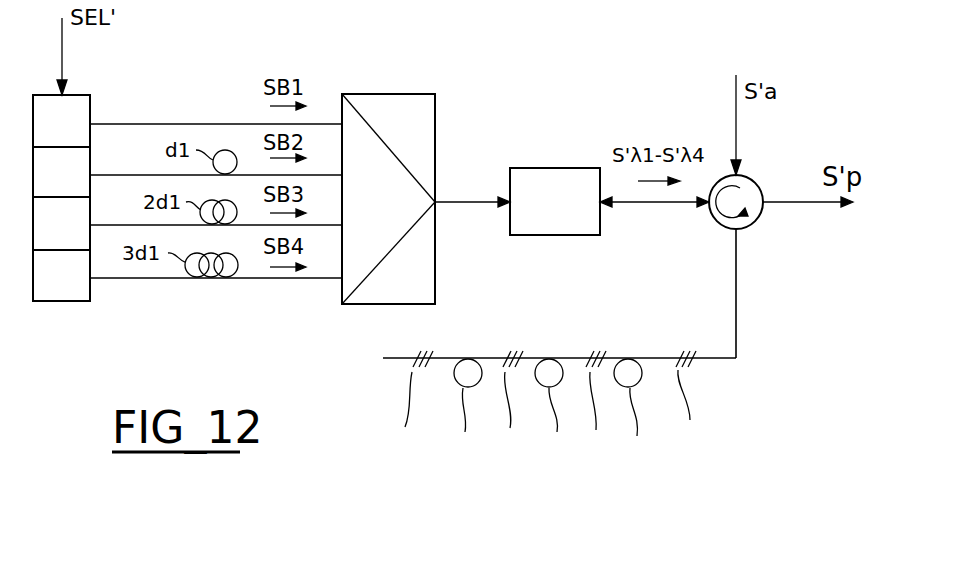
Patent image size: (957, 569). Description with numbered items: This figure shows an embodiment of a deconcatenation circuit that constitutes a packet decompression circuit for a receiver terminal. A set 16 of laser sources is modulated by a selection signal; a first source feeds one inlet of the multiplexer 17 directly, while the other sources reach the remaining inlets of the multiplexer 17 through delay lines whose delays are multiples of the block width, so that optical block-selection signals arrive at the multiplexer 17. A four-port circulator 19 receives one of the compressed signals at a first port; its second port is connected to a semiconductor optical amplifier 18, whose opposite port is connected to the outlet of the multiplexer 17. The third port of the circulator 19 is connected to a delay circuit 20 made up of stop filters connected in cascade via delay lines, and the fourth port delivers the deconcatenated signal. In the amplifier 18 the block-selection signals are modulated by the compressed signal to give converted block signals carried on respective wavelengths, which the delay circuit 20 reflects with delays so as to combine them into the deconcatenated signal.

The set of laser sources 16 is at (68, 301).
The multiplexer 17 is at (395, 93).
The semiconductor optical amplifier 18 is at (560, 168).
The four-port circulator 19 is at (752, 225).
The delay circuit 20 is at (560, 490).